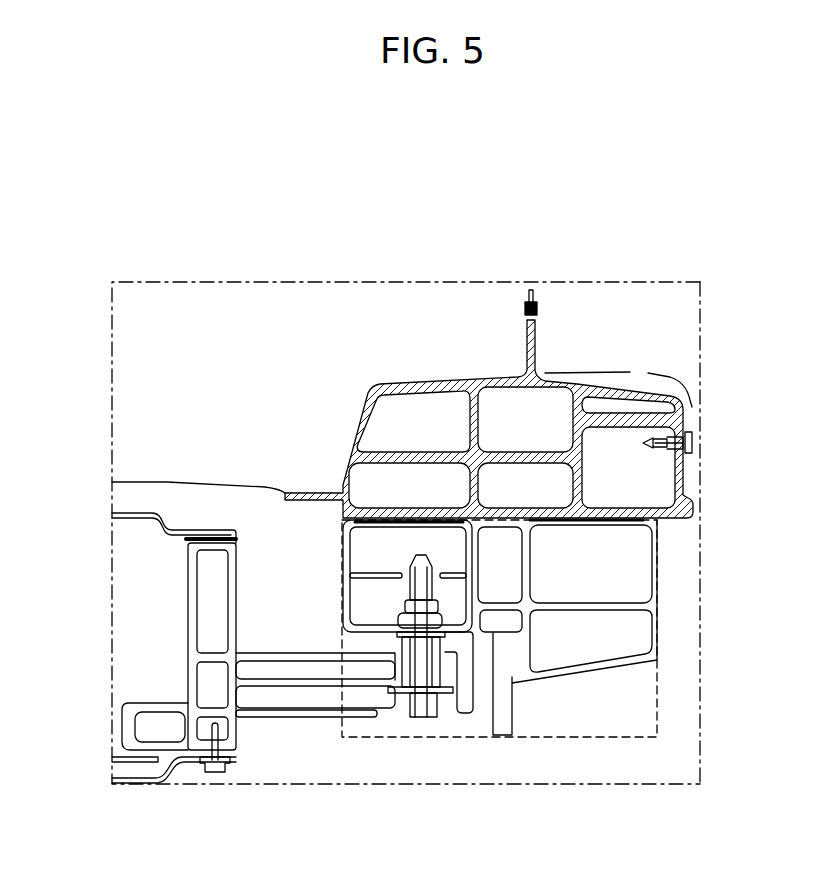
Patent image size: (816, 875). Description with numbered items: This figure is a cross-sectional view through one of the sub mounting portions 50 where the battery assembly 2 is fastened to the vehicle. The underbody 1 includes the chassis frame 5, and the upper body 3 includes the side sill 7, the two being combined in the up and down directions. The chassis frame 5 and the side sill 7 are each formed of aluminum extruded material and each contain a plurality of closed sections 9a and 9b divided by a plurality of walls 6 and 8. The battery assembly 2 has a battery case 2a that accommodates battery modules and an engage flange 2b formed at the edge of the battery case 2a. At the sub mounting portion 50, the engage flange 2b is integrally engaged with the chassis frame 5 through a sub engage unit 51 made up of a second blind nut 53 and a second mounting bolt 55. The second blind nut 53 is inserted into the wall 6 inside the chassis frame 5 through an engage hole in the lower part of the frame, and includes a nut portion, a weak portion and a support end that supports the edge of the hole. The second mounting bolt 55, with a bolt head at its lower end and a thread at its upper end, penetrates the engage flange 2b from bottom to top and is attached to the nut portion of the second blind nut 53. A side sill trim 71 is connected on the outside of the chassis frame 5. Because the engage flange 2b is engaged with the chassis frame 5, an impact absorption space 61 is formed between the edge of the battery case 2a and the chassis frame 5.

The underbody 1 is at (167, 570).
The battery assembly 2 is at (147, 661).
The battery case 2a is at (135, 727).
The engage flange 2b is at (323, 680).
The upper body 3 is at (483, 364).
The chassis frame 5 is at (607, 781).
The wall 6 is at (453, 578).
The side sill 7 is at (465, 333).
The wall 8 is at (437, 456).
The closed section 9a is at (595, 585).
The closed section 9b is at (519, 246).
The sub mounting portion 50 is at (406, 505).
The sub engage unit 51 is at (302, 596).
The second blind nut 53 is at (424, 604).
The second mounting bolt 55 is at (432, 710).
The impact absorption space 61 is at (276, 645).
The side sill trim 71 is at (728, 588).